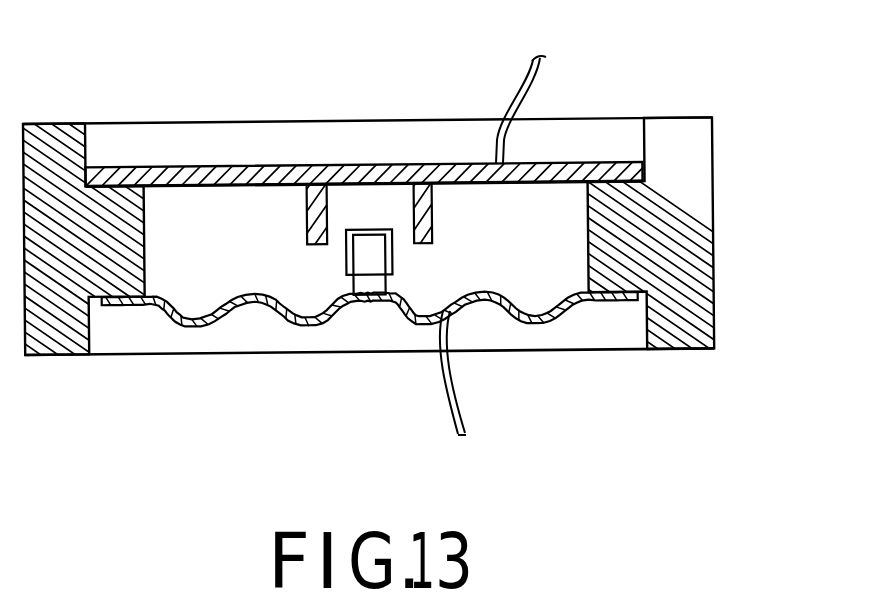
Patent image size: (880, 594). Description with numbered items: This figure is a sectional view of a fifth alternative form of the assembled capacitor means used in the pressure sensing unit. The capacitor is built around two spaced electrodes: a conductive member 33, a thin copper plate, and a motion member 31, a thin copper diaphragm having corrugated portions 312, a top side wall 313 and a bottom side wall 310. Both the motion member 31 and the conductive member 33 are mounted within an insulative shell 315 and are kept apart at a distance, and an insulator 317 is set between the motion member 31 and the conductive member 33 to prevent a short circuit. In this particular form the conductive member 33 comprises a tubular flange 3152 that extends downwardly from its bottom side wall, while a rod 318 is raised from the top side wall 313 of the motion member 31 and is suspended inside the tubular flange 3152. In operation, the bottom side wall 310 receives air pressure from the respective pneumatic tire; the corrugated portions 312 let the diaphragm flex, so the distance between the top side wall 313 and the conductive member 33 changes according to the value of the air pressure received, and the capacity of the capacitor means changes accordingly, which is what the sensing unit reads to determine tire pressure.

The motion member 31 is at (123, 306).
The conductive member 33 is at (160, 168).
The bottom side wall 310 is at (550, 328).
The corrugated portions 312 is at (247, 307).
The top side wall 313 is at (508, 290).
The insulative shell 315 is at (688, 263).
The insulator 317 is at (360, 233).
The rod 318 is at (373, 245).
The tubular flange 3152 is at (310, 218).